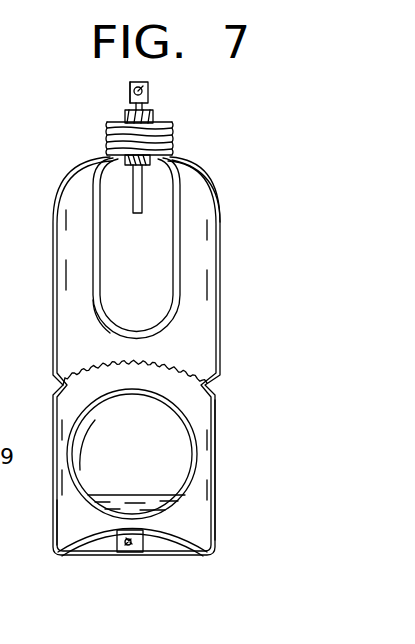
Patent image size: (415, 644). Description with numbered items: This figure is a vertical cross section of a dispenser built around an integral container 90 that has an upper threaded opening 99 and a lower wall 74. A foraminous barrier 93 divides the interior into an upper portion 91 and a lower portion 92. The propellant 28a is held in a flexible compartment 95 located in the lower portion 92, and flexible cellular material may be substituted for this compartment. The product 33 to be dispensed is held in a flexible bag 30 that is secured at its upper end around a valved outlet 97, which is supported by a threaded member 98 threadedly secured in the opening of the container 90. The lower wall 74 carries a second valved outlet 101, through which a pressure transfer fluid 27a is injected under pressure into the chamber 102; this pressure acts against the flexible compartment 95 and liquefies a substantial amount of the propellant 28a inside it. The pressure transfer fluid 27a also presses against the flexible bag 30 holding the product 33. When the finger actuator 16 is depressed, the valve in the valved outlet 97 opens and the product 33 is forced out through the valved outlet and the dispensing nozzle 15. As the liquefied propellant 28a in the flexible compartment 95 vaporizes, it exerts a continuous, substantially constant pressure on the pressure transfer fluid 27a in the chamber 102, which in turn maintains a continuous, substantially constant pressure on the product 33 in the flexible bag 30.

The dispensing nozzle 15 is at (131, 97).
The finger actuator 16 is at (149, 90).
The pressure transfer fluid 27a is at (74, 380).
The propellant 28a is at (117, 495).
The flexible bag 30 is at (101, 326).
The product 33 is at (136, 248).
The lower wall 74 is at (176, 546).
The integral container 90 is at (222, 250).
The upper portion 91 is at (200, 198).
The lower portion 92 is at (212, 515).
The foraminous barrier 93 is at (160, 366).
The flexible compartment 95 is at (197, 450).
The valved outlet 97 is at (154, 163).
The threaded member 98 is at (157, 130).
The upper threaded opening 99 is at (172, 143).
The valved outlet 101 is at (128, 549).
The chamber 102 is at (65, 522).